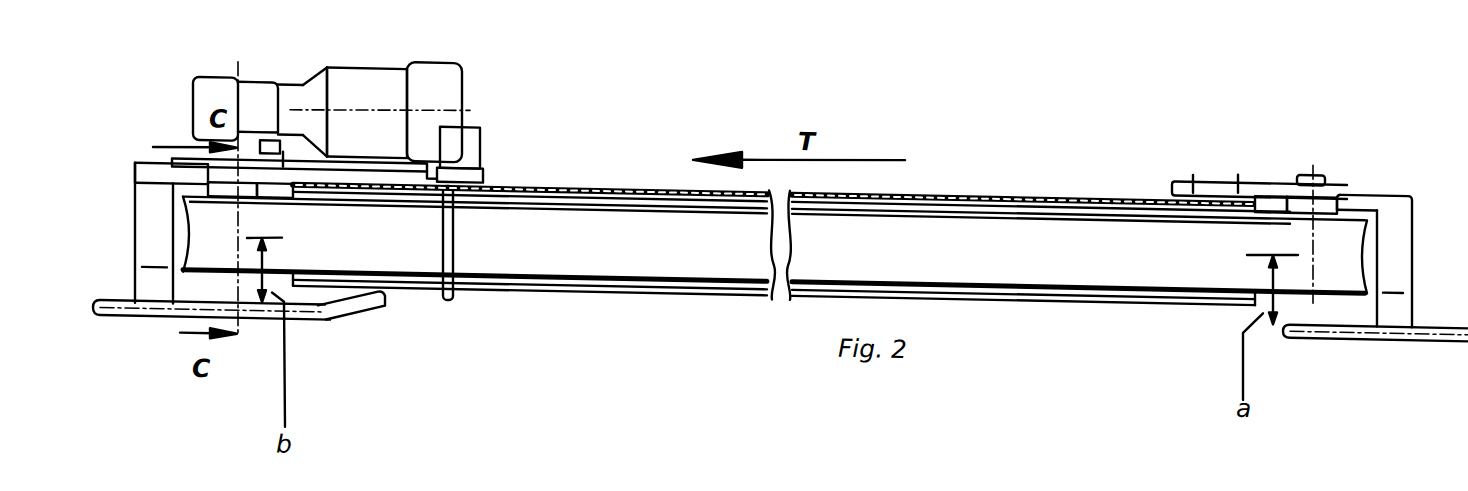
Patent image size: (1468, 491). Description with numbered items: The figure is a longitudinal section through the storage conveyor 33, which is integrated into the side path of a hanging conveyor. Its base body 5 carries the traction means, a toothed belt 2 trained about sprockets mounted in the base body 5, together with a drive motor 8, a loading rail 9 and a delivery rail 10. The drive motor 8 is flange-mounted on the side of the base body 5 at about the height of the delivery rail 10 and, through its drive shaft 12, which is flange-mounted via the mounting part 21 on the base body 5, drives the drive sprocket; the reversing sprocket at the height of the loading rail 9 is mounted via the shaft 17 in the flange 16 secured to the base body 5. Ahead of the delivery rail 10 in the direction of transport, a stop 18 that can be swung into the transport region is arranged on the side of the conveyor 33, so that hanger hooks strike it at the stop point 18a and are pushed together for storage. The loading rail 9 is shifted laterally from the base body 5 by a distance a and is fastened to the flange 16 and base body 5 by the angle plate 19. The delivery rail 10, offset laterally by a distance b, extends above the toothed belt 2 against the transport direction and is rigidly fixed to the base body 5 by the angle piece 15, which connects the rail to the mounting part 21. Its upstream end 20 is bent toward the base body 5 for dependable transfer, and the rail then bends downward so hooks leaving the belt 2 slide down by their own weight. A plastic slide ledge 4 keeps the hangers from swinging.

The toothed belt 2 is at (940, 245).
The slide ledge 4 is at (972, 274).
The base body 5 is at (1017, 172).
The drive motor 8 is at (378, 70).
The loading rail 9 is at (1357, 310).
The delivery rail 10 is at (180, 309).
The drive shaft 12 is at (227, 183).
The angle piece 15 is at (152, 230).
The flange 16 is at (1260, 165).
The shaft 17 is at (1325, 180).
The stop 18 is at (457, 138).
The stop point 18a is at (450, 224).
The angle plate 19 is at (1392, 217).
The end of the rail 20 is at (347, 313).
The mounting part 21 is at (145, 169).
The storage conveyor 33 is at (615, 160).